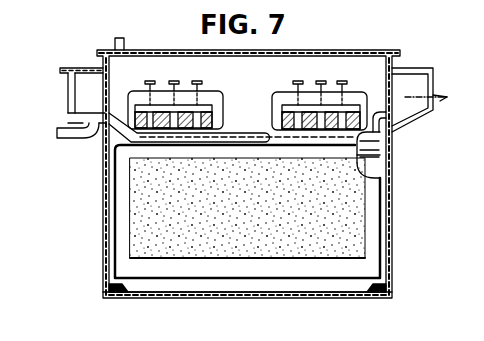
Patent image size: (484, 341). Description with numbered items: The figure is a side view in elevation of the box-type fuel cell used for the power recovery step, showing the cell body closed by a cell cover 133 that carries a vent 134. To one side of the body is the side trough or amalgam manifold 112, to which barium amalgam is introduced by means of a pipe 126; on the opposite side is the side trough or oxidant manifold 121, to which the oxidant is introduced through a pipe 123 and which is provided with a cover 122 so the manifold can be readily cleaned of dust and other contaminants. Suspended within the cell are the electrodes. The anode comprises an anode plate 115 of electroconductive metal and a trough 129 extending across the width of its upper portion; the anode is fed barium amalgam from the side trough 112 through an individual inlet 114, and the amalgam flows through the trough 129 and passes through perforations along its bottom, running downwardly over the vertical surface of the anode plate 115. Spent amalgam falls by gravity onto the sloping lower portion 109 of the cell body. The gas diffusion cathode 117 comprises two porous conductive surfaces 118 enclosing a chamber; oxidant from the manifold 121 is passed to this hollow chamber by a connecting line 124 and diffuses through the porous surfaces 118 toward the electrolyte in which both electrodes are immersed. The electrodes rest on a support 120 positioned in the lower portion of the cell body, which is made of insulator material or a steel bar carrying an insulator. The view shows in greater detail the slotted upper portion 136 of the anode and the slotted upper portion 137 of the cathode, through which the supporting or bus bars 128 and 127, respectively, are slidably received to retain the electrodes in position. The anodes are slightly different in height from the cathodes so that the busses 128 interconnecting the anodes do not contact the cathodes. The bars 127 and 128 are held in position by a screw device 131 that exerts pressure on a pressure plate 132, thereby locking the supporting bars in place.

The sloping lower portion 109 is at (274, 297).
The side trough 112 is at (430, 80).
The individual inlet 114 is at (379, 112).
The anode plate 115 is at (373, 165).
The gas diffusion cathode 117 is at (126, 240).
The porous conductive surfaces 118 is at (349, 213).
The support 120 is at (108, 287).
The side trough 121 is at (68, 92).
The cover 122 is at (78, 68).
The pipe 123 is at (64, 128).
The connecting line 124 is at (106, 126).
The pipe 126 is at (439, 106).
The bar 127 is at (321, 129).
The bar 128 is at (200, 122).
The trough 129 is at (379, 140).
The screw device 131 is at (172, 84).
The pressure plate 132 is at (133, 101).
The cell cover 133 is at (302, 52).
The vent 134 is at (115, 42).
The upper portion 136 is at (213, 91).
The upper portion 137 is at (282, 93).